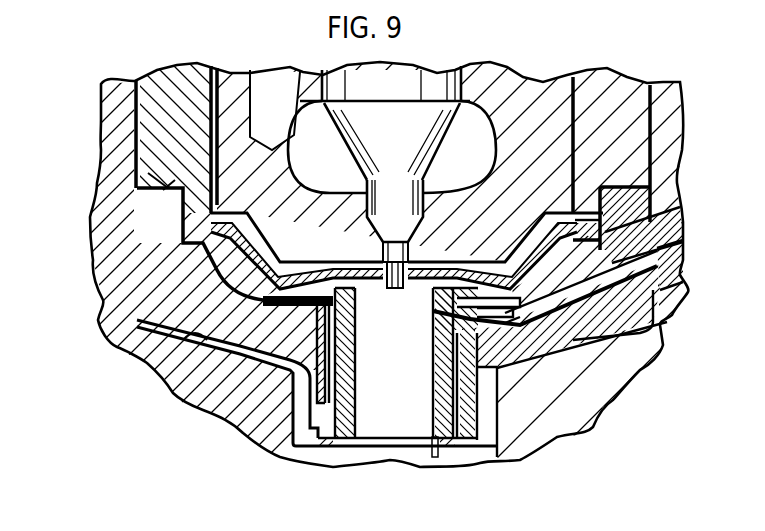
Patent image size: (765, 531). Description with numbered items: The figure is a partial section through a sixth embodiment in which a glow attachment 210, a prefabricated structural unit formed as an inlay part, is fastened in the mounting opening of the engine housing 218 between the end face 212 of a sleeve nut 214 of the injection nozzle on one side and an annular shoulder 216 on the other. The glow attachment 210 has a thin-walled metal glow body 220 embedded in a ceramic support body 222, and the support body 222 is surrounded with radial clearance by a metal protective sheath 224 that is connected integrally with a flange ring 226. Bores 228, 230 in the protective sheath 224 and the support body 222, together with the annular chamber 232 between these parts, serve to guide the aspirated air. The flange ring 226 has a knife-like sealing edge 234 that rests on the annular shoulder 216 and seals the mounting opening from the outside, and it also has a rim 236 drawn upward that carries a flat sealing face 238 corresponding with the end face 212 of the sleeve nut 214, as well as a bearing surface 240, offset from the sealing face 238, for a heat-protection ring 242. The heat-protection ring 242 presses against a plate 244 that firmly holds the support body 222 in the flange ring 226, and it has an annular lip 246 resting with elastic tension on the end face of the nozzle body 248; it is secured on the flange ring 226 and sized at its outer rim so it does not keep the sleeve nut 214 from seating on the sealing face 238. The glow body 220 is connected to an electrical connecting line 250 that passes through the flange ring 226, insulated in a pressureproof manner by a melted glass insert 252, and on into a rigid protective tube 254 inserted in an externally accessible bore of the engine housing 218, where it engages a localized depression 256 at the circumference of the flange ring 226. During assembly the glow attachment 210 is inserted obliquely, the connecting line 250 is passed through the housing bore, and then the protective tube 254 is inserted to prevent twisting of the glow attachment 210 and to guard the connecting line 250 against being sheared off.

The glow attachment 210 is at (367, 456).
The end face 212 is at (157, 180).
The sleeve nut 214 is at (182, 97).
The annular shoulder 216 is at (190, 403).
The engine housing 218 is at (117, 352).
The glow body 220 is at (418, 413).
The support body 222 is at (457, 410).
The protective sheath 224 is at (517, 420).
The flange ring 226 is at (640, 322).
The bore 228 is at (315, 423).
The bore 230 is at (435, 348).
The annular chamber 232 is at (473, 390).
The sealing edge 234 is at (158, 367).
The rim 236 is at (150, 247).
The sealing face 238 is at (147, 200).
The bearing surface 240 is at (190, 268).
The heat-protection ring 242 is at (183, 232).
The plate 244 is at (230, 413).
The annular lip 246 is at (330, 262).
The nozzle body 248 is at (520, 123).
The electrical connecting line 250 is at (645, 273).
The melted glass insert 252 is at (633, 292).
The protective tube 254 is at (677, 212).
The localized depression 256 is at (670, 205).